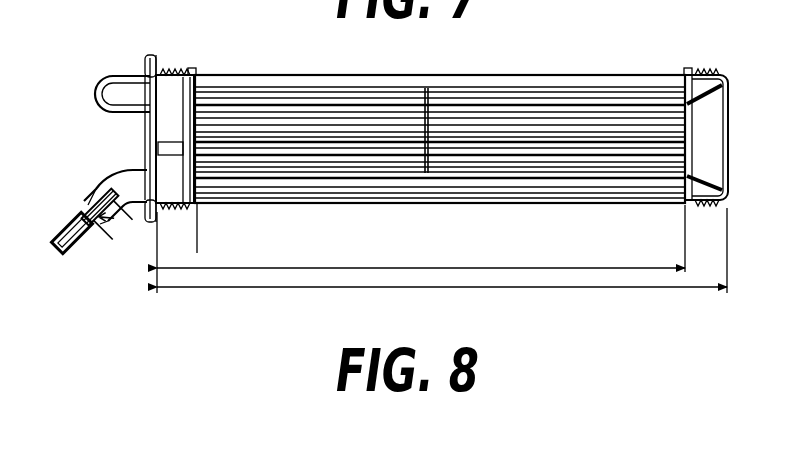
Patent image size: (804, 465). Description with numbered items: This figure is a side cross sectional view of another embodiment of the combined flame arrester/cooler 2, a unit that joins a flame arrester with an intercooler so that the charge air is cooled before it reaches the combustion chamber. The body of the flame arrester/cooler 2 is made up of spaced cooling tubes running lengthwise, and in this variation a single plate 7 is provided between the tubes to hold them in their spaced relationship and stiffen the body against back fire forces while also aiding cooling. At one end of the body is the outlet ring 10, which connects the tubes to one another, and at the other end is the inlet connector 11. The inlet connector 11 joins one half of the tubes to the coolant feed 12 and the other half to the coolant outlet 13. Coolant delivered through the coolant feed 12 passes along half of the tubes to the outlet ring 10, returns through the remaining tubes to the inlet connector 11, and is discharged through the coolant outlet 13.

The flame arrester/cooler 2 is at (543, 247).
The plate 7 is at (423, 176).
The outlet ring 10 is at (710, 113).
The inlet connector 11 is at (90, 240).
The coolant feed 12 is at (87, 190).
The coolant outlet 13 is at (122, 76).